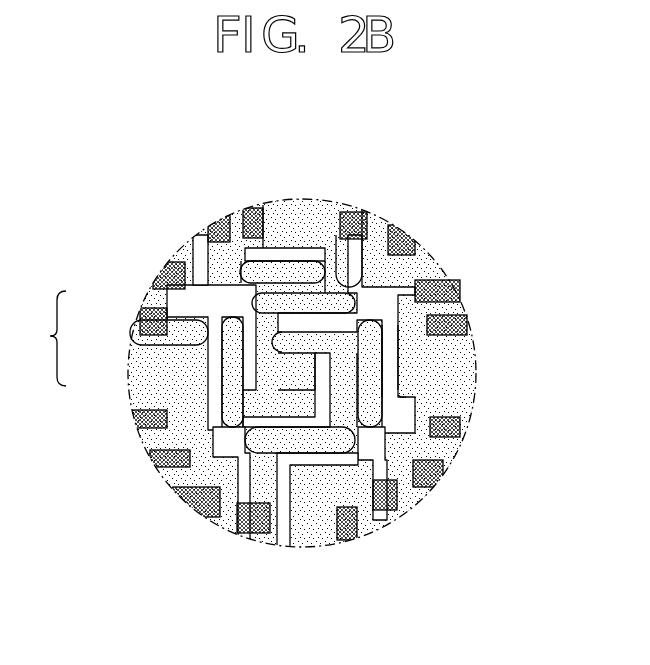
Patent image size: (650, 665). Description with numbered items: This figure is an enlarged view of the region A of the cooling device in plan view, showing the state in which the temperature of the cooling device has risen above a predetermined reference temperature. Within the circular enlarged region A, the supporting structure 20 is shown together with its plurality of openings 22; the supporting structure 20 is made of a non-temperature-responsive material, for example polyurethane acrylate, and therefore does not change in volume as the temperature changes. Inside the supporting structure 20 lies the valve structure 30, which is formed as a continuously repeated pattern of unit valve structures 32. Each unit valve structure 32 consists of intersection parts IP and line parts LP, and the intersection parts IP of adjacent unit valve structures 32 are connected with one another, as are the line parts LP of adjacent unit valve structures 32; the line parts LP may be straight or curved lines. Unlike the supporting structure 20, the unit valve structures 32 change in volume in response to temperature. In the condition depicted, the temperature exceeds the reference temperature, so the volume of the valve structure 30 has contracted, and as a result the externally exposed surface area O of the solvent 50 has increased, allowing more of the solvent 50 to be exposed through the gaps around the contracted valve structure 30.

The enlarged region A is at (502, 162).
The supporting structure 20 is at (418, 340).
The openings 22 is at (410, 281).
The valve structure 30 is at (248, 298).
The unit valve structures 32 is at (43, 338).
The line parts LP is at (232, 338).
The intersection parts IP is at (250, 372).
The externally exposed surface area O is at (388, 343).
The solvent 50 is at (395, 373).